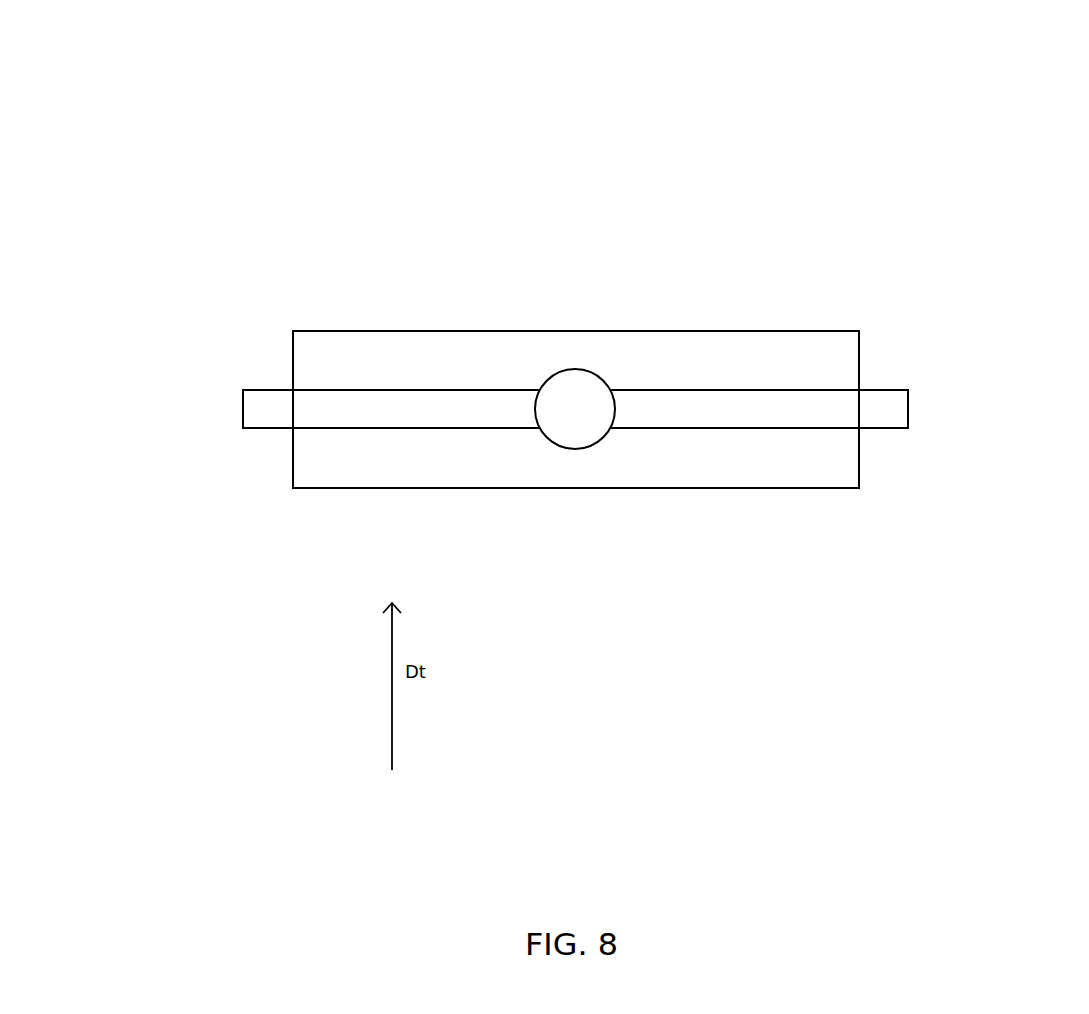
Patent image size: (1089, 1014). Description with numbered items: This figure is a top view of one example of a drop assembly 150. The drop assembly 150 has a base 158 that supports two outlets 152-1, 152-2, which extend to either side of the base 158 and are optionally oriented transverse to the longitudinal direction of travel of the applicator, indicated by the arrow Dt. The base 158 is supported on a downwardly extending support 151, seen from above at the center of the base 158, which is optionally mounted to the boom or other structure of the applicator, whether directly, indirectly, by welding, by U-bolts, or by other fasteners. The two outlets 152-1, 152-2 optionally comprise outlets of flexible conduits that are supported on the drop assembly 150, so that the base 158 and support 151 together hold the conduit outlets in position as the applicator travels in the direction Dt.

The drop assembly 150 is at (223, 120).
The support 151 is at (574, 369).
The outlet 152-1 is at (270, 389).
The outlet 152-2 is at (893, 389).
The base 158 is at (639, 331).